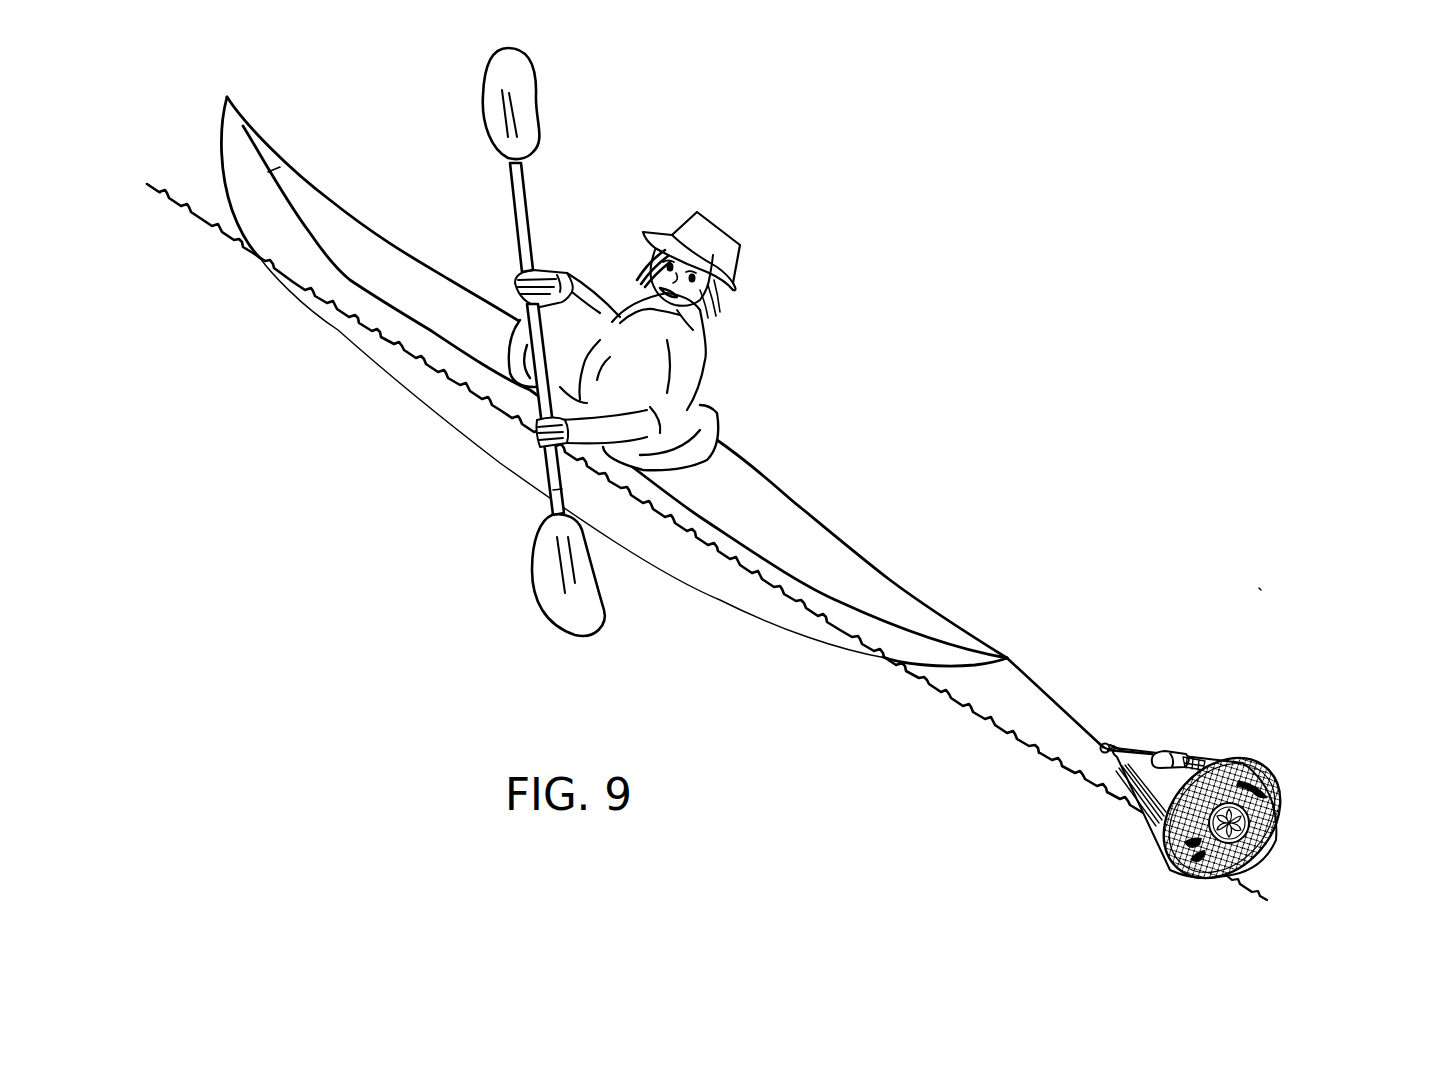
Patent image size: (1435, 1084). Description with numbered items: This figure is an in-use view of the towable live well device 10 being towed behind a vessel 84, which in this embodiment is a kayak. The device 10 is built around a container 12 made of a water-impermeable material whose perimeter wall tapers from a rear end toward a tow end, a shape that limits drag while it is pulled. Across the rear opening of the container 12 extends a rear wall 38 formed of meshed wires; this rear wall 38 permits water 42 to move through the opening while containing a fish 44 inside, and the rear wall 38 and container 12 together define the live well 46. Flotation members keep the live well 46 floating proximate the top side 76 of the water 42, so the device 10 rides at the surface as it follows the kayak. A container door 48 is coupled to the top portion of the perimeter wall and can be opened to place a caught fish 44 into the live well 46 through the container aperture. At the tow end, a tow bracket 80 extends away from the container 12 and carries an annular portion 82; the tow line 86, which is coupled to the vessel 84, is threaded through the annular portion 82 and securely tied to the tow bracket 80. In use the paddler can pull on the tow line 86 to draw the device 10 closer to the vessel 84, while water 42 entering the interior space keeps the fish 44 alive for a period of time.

The towable live well device 10 is at (1268, 552).
The container 12 is at (1143, 818).
The rear wall 38 is at (1270, 837).
The water 42 is at (171, 216).
The fish 44 is at (1250, 777).
The live well 46 is at (1210, 786).
The container door 48 is at (1167, 750).
The top side of the water 76 is at (984, 720).
The tow bracket 80 is at (1130, 747).
The annular portion 82 is at (1107, 753).
The vessel 84 is at (763, 492).
The tow line 86 is at (1034, 684).